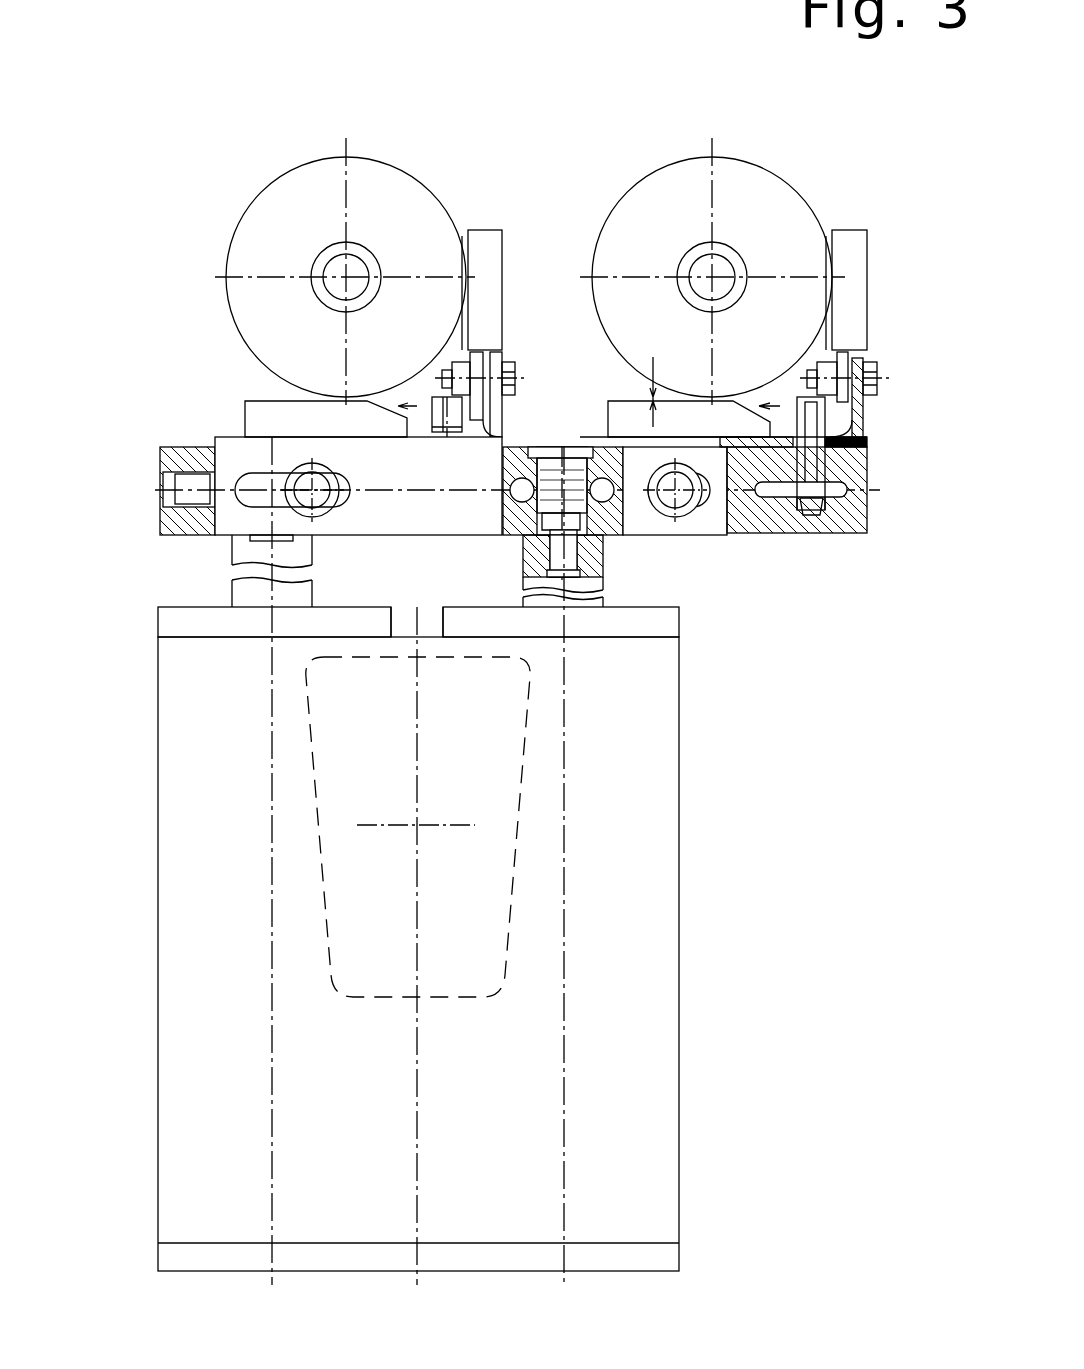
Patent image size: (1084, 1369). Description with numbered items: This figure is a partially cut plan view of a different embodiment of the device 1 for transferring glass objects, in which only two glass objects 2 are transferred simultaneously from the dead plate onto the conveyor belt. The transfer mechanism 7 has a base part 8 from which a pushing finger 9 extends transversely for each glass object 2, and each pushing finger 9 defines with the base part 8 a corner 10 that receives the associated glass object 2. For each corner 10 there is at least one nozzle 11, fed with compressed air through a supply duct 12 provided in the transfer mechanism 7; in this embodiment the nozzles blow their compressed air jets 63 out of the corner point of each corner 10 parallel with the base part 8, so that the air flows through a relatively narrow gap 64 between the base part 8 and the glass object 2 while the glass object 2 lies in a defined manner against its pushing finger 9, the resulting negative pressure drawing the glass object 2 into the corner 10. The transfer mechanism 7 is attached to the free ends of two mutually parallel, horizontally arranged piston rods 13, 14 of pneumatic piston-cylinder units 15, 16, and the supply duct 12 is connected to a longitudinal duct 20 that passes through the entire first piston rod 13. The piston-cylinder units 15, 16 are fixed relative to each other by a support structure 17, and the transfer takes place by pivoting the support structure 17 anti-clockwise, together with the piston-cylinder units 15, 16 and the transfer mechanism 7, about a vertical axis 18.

The device 1 is at (766, 775).
The glass object 2 is at (272, 198).
The transfer mechanism 7 is at (150, 544).
The base part 8 is at (855, 530).
The pushing finger 9 is at (483, 244).
The corner 10 is at (457, 337).
The nozzle 11 is at (483, 427).
The supply duct 12 is at (560, 447).
The first piston rod 13 is at (595, 597).
The second piston rod 14 is at (243, 553).
The first piston-cylinder unit 15 is at (690, 637).
The second piston-cylinder unit 16 is at (150, 632).
The support structure 17 is at (422, 641).
The vertical axis 18 is at (417, 825).
The longitudinal duct 20 is at (575, 570).
The compressed air jet 63 is at (417, 406).
The gap 64 is at (652, 397).